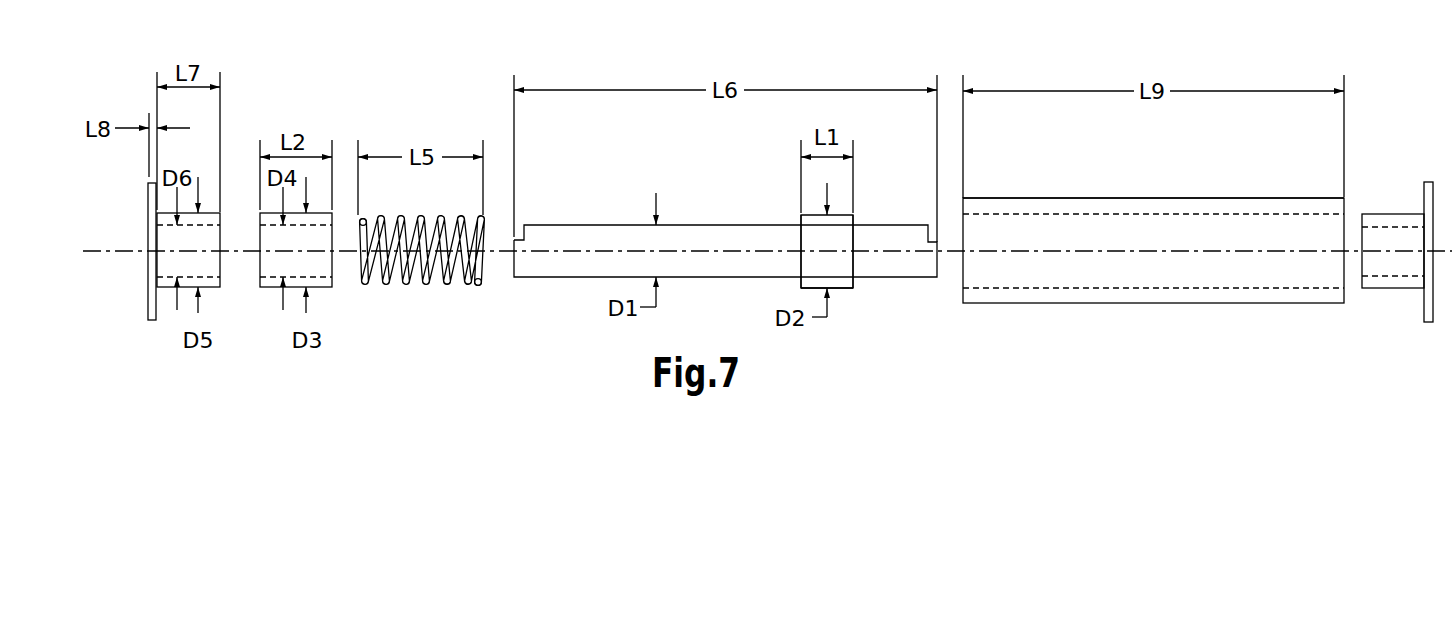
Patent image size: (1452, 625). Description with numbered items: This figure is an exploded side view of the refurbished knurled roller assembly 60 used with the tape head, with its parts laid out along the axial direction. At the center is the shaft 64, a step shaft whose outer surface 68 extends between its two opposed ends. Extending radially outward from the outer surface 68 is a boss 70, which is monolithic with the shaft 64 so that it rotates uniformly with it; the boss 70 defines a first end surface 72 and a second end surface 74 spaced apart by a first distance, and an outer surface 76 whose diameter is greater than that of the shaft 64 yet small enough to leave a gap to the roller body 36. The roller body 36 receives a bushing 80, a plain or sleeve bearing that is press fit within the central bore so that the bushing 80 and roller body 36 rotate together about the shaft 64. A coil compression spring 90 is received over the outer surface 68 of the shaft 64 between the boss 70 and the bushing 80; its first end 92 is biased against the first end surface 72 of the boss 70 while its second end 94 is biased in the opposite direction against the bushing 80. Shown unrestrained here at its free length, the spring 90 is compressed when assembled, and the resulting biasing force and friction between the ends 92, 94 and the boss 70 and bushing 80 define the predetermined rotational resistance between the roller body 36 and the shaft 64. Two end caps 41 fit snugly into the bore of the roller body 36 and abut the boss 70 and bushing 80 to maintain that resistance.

The roller body 36 is at (1090, 197).
The end caps 41 is at (152, 322).
The knurled roller assembly 60 is at (1030, 75).
The shaft 64 is at (597, 278).
The outer surface 68 is at (616, 285).
The boss 70 is at (800, 285).
The first end surface 72 is at (801, 223).
The second end surface 74 is at (853, 223).
The outer surface 76 is at (847, 288).
The bushing 80 is at (270, 290).
The coil compression spring 90 is at (423, 285).
The first end 92 is at (479, 284).
The second end 94 is at (362, 279).